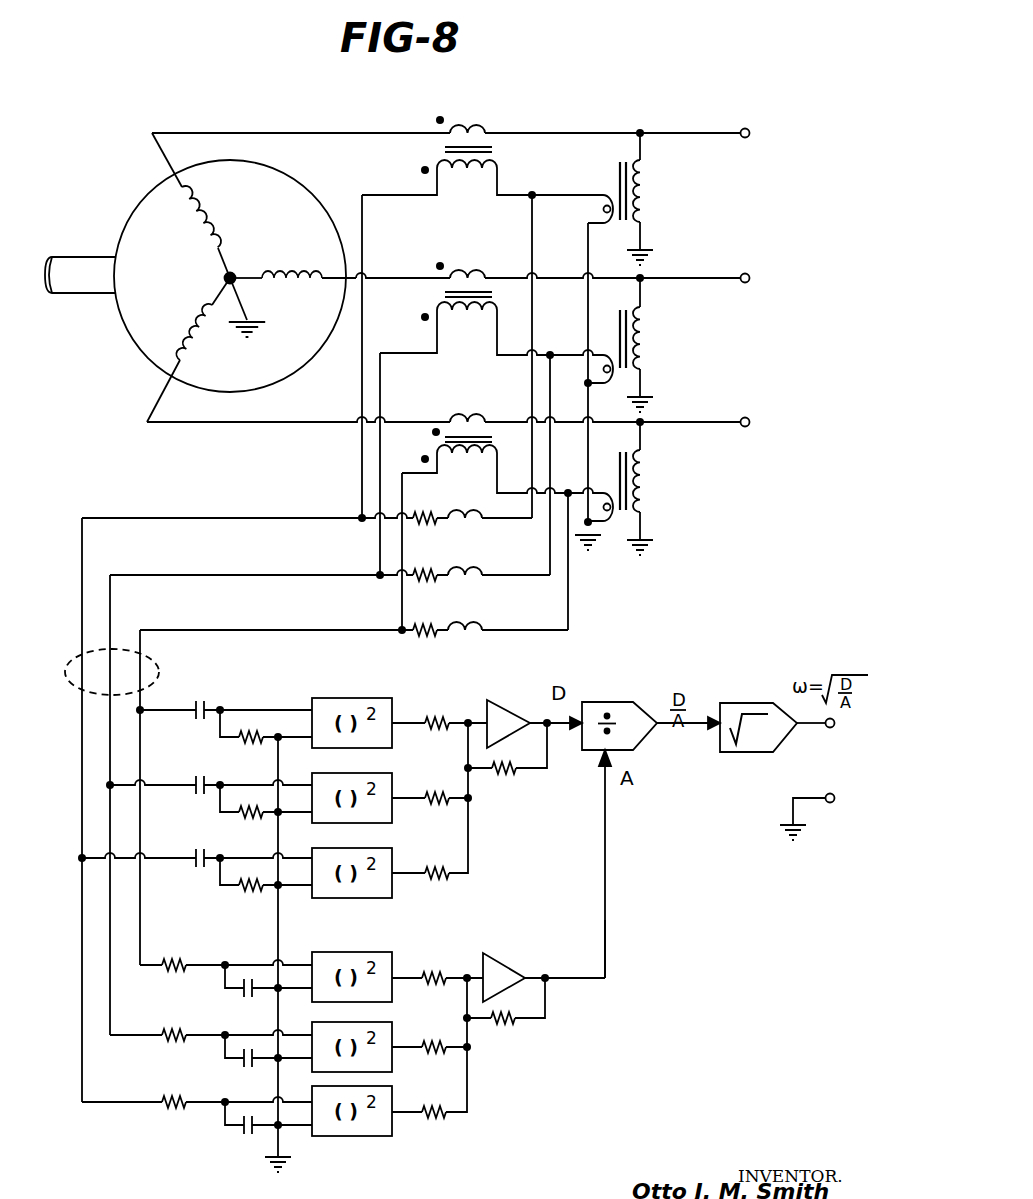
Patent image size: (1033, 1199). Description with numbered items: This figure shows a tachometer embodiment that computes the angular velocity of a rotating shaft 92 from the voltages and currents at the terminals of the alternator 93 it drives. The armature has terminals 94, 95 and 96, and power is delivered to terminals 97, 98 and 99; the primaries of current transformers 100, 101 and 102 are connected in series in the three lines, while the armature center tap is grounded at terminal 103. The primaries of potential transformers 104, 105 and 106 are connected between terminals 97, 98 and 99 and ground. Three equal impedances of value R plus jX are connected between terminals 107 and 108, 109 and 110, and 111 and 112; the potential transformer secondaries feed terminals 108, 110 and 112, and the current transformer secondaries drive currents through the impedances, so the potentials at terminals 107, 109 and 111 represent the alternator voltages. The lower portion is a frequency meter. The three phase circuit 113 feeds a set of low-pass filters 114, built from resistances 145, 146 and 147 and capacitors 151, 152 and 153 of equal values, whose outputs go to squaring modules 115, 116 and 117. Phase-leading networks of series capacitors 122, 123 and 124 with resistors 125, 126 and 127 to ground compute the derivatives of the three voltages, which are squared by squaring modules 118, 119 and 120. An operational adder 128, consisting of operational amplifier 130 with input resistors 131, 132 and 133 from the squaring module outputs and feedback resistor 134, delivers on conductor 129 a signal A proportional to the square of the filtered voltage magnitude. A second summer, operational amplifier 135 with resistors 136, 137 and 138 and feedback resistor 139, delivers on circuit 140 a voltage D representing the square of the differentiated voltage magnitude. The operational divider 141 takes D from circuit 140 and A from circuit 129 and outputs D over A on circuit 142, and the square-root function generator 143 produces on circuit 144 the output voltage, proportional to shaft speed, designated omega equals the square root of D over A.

The rotating shaft 92 is at (91, 256).
The alternator 93 is at (137, 337).
The armature terminal 94 is at (299, 131).
The armature terminal 95 is at (420, 276).
The armature terminal 96 is at (325, 422).
The terminal 97 is at (747, 130).
The terminal 98 is at (760, 262).
The terminal 99 is at (760, 408).
The current transformer 100 is at (481, 155).
The current transformer 101 is at (443, 294).
The current transformer 102 is at (428, 437).
The ground terminal 103 is at (236, 271).
The potential transformer 104 is at (625, 167).
The potential transformer 105 is at (634, 318).
The potential transformer 106 is at (640, 453).
The terminal 107 is at (356, 516).
The terminal 108 is at (536, 195).
The terminal 109 is at (378, 573).
The terminal 110 is at (553, 352).
The terminal 111 is at (400, 628).
The terminal 112 is at (571, 490).
The three phase circuit 113 is at (65, 678).
The low-pass filters 114 is at (198, 1120).
The squaring module 115 is at (388, 1090).
The squaring module 116 is at (388, 1024).
The squaring module 117 is at (388, 952).
The squaring module 118 is at (386, 848).
The squaring module 119 is at (386, 773).
The squaring module 120 is at (396, 683).
The series capacitor 122 is at (200, 855).
The series capacitor 123 is at (200, 782).
The series capacitor 124 is at (204, 700).
The resistor 125 is at (242, 893).
The resistor 126 is at (242, 818).
The resistor 127 is at (242, 744).
The operational adder 128 is at (529, 1064).
The conductor 129 is at (605, 918).
The operational amplifier 130 is at (504, 956).
The resistor 131 is at (445, 950).
The resistor 132 is at (460, 1026).
The resistor 133 is at (434, 1121).
The resistor 134 is at (504, 1024).
The operational amplifier 135 is at (526, 686).
The resistor 136 is at (462, 698).
The resistor 137 is at (462, 772).
The resistor 138 is at (438, 882).
The resistor 139 is at (495, 776).
The circuit 140 is at (558, 731).
The operational divider 141 is at (640, 686).
The circuit 142 is at (690, 730).
The square-root function generator 143 is at (768, 668).
The output circuit 144 is at (830, 728).
The resistance 145 is at (190, 1076).
The resistance 146 is at (190, 1008).
The resistance 147 is at (190, 935).
The capacitor 151 is at (256, 1130).
The capacitor 152 is at (256, 1064).
The capacitor 153 is at (256, 994).